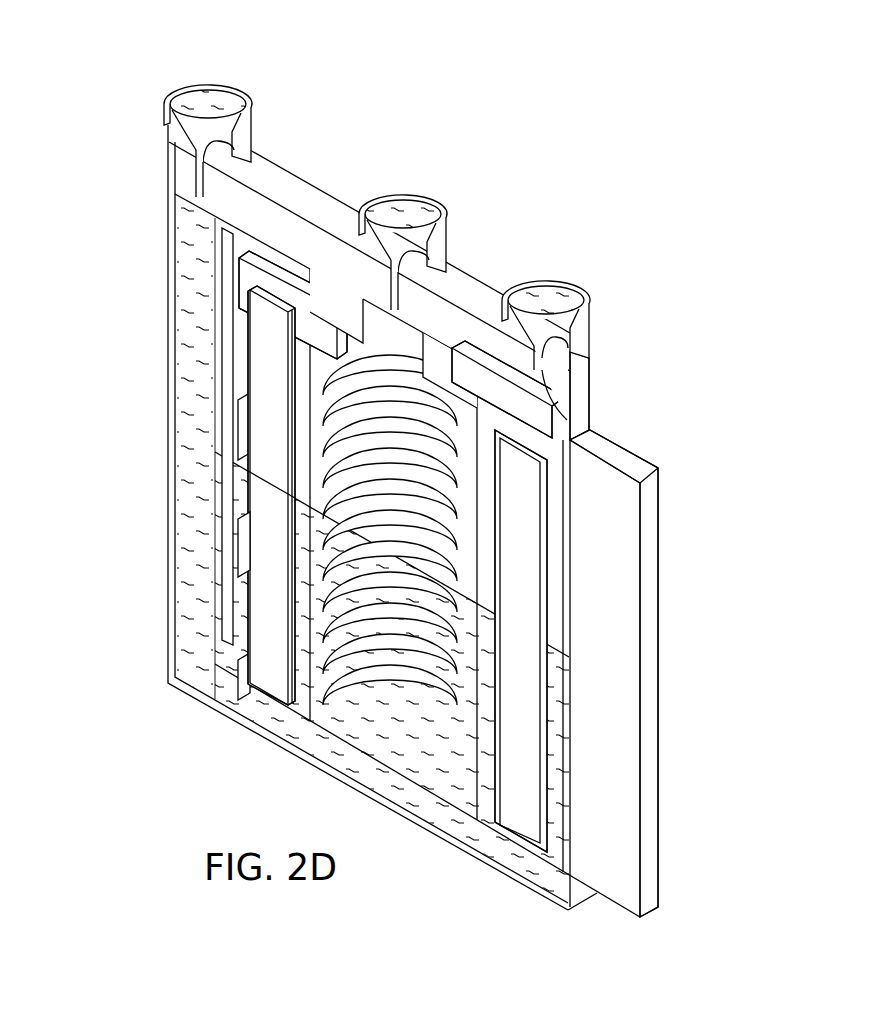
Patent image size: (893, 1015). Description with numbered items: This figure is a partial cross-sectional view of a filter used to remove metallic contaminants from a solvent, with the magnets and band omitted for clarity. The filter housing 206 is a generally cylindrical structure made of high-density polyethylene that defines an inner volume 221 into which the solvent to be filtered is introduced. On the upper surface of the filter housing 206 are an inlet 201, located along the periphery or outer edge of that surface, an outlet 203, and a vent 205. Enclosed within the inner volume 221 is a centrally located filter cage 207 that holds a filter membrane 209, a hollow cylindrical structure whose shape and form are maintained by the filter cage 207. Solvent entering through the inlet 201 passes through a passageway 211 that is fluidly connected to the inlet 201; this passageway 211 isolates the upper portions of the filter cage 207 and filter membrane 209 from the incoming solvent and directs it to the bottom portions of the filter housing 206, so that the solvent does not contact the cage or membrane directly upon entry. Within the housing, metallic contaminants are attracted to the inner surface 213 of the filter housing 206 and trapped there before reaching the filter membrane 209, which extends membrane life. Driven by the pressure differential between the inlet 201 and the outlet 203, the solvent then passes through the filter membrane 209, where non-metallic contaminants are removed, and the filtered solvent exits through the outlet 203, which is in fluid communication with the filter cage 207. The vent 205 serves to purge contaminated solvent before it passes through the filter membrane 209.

The inlet 201 is at (220, 87).
The outlet 203 is at (418, 197).
The vent 205 is at (571, 283).
The filter housing 206 is at (183, 238).
The filter cage 207 is at (242, 337).
The filter membrane 209 is at (333, 440).
The passageway 211 is at (225, 553).
The inner surface 213 is at (558, 648).
The inner volume 221 is at (590, 393).